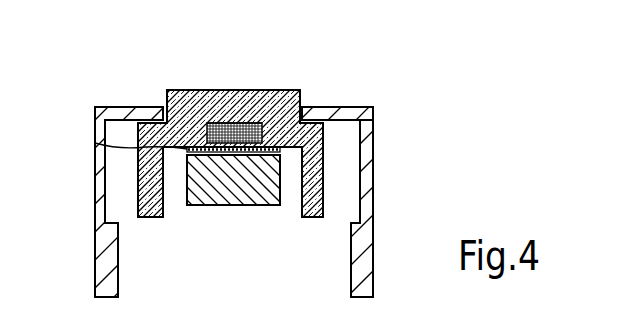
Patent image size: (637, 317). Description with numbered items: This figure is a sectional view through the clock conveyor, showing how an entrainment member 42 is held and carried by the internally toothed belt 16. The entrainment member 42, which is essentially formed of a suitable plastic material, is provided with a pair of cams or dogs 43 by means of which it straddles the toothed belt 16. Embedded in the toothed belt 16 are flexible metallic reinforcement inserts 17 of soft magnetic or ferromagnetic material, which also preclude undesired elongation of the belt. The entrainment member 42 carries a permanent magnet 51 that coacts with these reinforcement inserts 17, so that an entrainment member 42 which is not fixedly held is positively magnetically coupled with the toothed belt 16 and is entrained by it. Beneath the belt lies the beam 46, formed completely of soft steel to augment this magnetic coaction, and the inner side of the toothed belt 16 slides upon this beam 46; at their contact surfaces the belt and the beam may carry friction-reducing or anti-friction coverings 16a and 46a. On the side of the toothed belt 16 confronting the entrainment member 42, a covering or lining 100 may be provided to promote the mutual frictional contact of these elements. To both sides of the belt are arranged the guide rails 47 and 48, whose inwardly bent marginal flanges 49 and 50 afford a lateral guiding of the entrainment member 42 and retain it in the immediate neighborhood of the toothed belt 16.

The covering or lining 100 is at (95, 143).
The toothed belt 16 is at (196, 130).
The friction-reducing covering 16a is at (207, 123).
The reinforcement inserts 17 is at (257, 147).
The entrainment member 42 is at (256, 86).
The cams 43 is at (155, 208).
The beam 46 is at (221, 217).
The friction-reducing covering 46a is at (253, 155).
The guide rail 47 is at (100, 185).
The guide rail 48 is at (367, 180).
The lateral flange 49 is at (120, 110).
The lateral flange 50 is at (347, 113).
The permanent magnet 51 is at (223, 123).